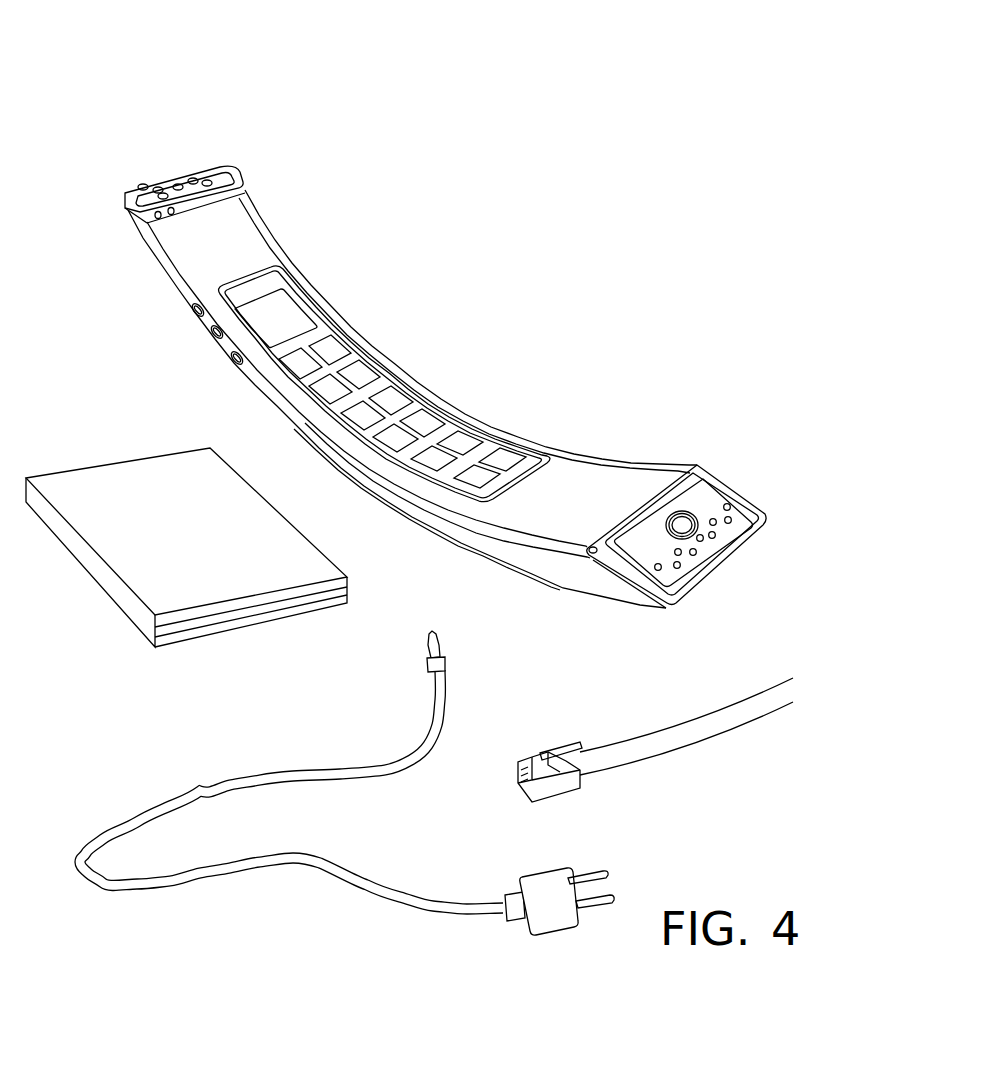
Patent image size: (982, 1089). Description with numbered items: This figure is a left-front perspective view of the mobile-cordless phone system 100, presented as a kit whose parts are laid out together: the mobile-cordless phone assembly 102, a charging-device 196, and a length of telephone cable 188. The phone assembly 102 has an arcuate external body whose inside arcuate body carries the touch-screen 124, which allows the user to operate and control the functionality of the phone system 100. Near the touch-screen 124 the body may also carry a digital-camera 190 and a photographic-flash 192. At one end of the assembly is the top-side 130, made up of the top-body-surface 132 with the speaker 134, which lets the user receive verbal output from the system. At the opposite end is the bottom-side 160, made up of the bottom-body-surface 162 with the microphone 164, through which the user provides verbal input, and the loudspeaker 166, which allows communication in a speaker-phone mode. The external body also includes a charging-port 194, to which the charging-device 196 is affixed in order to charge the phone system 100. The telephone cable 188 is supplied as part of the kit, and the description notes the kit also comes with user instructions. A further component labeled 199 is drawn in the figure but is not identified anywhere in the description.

The mobile-cordless phone system 100 is at (560, 82).
The mobile-cordless phone assembly 102 is at (594, 108).
The touch-screen 124 is at (375, 383).
The top-side 130 is at (215, 170).
The top-body-surface 132 is at (170, 183).
The speaker 134 is at (191, 172).
The bottom-side 160 is at (679, 496).
The bottom-body-surface 162 is at (659, 548).
The microphone 164 is at (690, 524).
The loudspeaker 166 is at (690, 572).
The telephone cable 188 is at (687, 732).
The digital-camera 190 is at (172, 222).
The photographic-flash 192 is at (157, 226).
The charging-port 194 is at (583, 554).
The charging-device 196 is at (360, 768).
The battery pack 199 is at (124, 627).